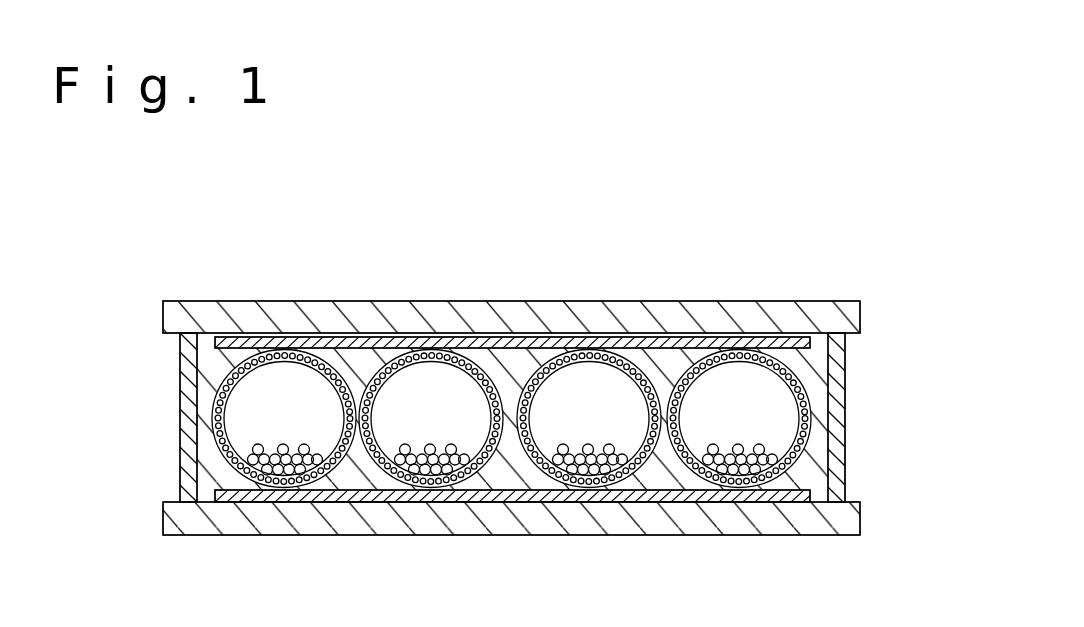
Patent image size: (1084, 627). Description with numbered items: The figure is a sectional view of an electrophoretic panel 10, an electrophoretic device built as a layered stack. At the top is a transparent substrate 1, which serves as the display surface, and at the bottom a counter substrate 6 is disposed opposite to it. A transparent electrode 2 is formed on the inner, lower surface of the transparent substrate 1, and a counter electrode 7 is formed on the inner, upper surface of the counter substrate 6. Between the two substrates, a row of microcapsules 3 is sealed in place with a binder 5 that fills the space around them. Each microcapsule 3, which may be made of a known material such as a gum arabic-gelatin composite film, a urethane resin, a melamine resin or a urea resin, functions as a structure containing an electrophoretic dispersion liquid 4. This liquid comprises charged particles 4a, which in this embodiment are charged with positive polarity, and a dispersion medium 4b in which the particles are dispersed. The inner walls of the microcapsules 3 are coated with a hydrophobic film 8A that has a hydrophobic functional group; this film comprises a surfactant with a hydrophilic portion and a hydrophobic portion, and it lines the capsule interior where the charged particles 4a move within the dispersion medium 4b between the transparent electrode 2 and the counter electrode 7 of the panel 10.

The transparent substrate 1 is at (317, 300).
The transparent electrode 2 is at (261, 337).
The microcapsules 3 is at (213, 436).
The electrophoretic dispersion liquid 4 is at (100, 340).
The charged particles 4a is at (252, 417).
The dispersion medium 4b is at (307, 447).
The binder 5 is at (215, 470).
The counter substrate 6 is at (397, 527).
The counter electrode 7 is at (273, 502).
The hydrophobic film 8A is at (781, 440).
The electrophoretic panel 10 is at (693, 232).